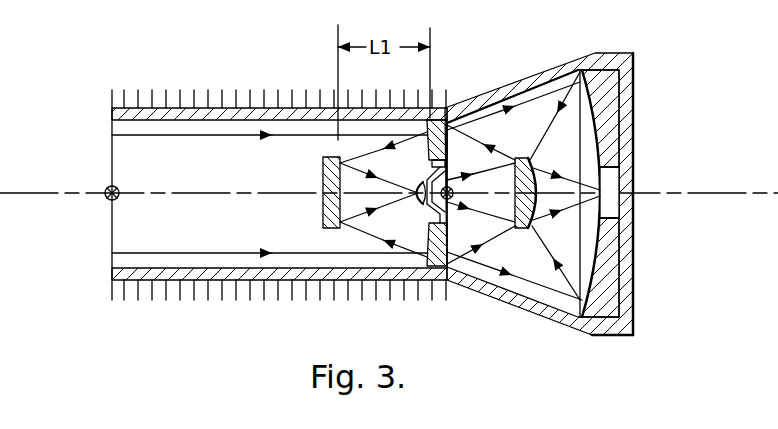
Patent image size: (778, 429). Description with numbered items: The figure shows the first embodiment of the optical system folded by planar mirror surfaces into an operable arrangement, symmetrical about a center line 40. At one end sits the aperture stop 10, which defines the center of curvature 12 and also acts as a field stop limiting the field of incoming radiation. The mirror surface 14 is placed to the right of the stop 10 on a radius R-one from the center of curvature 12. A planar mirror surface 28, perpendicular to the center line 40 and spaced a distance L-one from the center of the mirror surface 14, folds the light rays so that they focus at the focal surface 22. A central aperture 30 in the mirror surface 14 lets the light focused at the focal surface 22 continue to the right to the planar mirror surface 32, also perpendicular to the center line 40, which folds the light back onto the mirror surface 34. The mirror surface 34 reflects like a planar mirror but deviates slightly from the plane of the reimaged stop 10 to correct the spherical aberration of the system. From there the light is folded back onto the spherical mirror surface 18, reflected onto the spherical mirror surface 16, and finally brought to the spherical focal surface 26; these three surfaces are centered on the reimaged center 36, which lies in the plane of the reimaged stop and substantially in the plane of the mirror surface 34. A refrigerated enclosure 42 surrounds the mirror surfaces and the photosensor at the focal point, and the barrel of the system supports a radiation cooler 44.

The aperture stop 10 is at (112, 100).
The center of curvature 12 is at (106, 199).
The mirror surface 14 is at (428, 145).
The spherical mirror surface 16 is at (535, 226).
The spherical mirror surface 18 is at (590, 138).
The focal surface 22 is at (421, 200).
The spherical focal surface 26 is at (608, 184).
The planar mirror surface 28 is at (343, 206).
The central aperture 30 is at (483, 150).
The planar mirror surface 32 is at (514, 179).
The mirror surface 34 is at (450, 107).
The reimaged center 36 is at (487, 238).
The center line 40 is at (688, 197).
The refrigerated enclosure 42 is at (566, 70).
The radiation cooler 44 is at (181, 95).